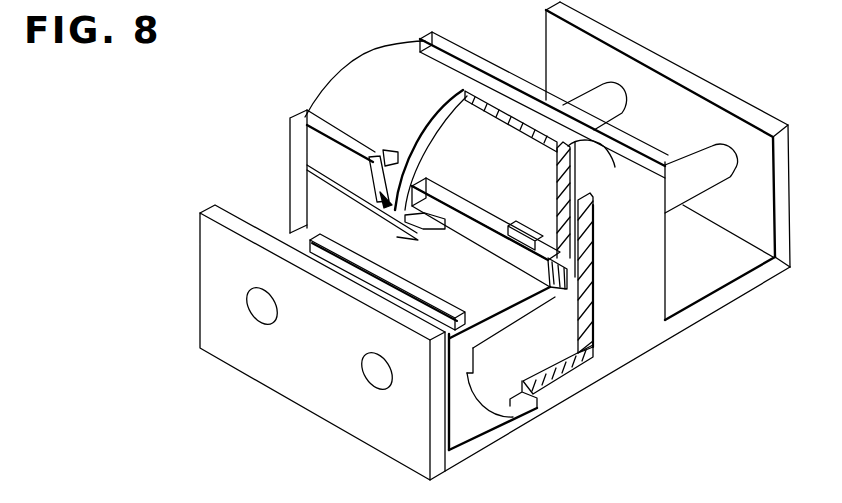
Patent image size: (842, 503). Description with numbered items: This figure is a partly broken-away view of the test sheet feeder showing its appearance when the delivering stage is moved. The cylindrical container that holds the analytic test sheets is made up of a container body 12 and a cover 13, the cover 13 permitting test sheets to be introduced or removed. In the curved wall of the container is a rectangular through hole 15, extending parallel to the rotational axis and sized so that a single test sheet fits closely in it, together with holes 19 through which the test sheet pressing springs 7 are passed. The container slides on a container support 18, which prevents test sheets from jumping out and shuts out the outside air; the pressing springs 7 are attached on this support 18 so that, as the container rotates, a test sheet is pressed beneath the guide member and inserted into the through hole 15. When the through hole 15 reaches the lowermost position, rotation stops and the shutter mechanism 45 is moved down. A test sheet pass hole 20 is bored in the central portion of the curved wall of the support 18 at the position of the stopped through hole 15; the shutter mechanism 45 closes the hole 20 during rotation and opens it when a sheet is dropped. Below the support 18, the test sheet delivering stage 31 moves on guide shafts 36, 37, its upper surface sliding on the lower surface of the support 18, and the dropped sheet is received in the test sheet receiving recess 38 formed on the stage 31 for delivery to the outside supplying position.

The test sheet pressing spring 7 is at (386, 150).
The container body 12 is at (395, 48).
The cover 13 is at (613, 167).
The through hole 15 is at (460, 198).
The container support 18 is at (313, 145).
The hole 19 is at (395, 140).
The test sheet pass hole 20 is at (510, 228).
The test sheet delivering stage 31 is at (510, 408).
The guide shaft 36 is at (262, 312).
The guide shaft 37 is at (377, 376).
The test sheet receiving recess 38 is at (567, 288).
The shutter mechanism 45 is at (313, 237).